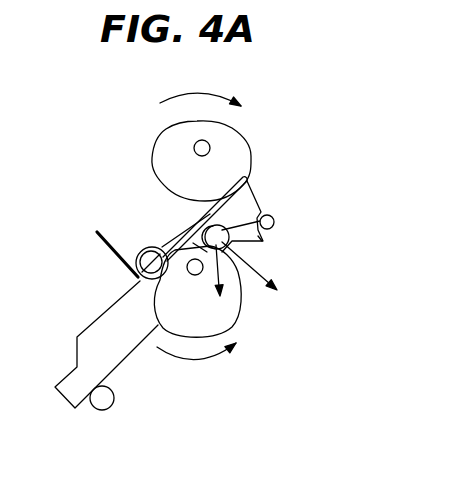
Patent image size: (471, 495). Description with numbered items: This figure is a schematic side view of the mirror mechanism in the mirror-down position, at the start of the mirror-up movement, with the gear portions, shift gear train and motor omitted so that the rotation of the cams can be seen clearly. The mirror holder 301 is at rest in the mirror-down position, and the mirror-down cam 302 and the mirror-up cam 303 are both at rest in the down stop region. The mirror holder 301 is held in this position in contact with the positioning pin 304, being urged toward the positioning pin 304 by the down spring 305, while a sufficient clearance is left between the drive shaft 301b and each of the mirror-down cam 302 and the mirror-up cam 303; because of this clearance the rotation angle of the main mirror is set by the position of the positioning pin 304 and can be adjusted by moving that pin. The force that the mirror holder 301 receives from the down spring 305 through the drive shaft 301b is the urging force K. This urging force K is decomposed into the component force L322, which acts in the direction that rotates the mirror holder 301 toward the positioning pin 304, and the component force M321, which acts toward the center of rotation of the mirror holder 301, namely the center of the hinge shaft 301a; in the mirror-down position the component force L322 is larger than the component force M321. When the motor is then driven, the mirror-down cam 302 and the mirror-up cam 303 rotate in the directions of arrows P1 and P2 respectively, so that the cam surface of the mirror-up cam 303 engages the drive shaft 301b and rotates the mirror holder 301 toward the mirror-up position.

The mirror holder 301 is at (90, 322).
The hinge shaft 301a is at (276, 222).
The drive shaft 301b is at (256, 242).
The mirror-down cam 302 is at (158, 148).
The mirror-up cam 303 is at (240, 313).
The positioning pin 304 is at (93, 411).
The down spring 305 is at (107, 231).
The component force M321 is at (297, 208).
The component force L322 is at (193, 288).
The urging force K is at (261, 272).
The rotation direction of mirror-down cam P1 is at (200, 85).
The rotation direction of mirror-up cam P2 is at (196, 368).